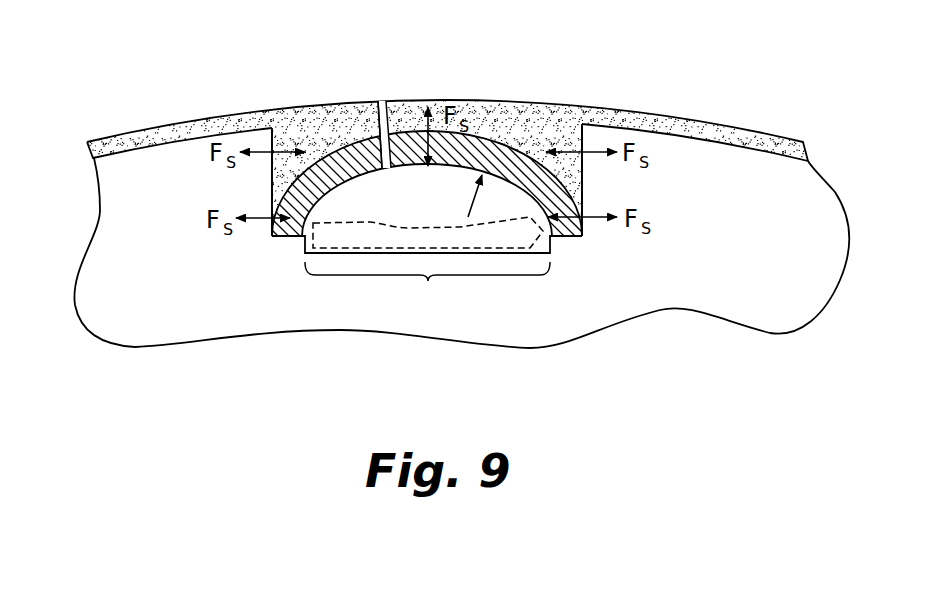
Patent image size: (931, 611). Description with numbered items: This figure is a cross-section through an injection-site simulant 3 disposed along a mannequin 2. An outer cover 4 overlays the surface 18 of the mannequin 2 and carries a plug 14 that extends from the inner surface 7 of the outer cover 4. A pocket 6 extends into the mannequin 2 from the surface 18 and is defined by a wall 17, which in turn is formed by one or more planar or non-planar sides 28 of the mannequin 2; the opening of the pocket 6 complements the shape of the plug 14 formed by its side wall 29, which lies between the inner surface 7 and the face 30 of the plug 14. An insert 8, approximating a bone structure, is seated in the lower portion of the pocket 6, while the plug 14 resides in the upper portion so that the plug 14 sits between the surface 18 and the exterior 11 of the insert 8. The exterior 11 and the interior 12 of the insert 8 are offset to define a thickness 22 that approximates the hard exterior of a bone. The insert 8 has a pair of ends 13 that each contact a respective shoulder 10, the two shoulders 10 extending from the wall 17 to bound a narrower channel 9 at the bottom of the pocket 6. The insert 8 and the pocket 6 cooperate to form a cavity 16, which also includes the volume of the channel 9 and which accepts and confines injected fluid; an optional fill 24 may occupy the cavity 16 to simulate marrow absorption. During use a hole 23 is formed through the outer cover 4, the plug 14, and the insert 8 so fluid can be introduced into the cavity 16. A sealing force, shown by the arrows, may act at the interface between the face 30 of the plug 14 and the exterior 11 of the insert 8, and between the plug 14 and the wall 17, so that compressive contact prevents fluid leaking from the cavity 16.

The mannequin 2 is at (146, 296).
The injection-site simulant 3 is at (213, 88).
The outer cover 4 is at (762, 150).
The pocket 6 is at (550, 243).
The inner surface 7 is at (740, 150).
The insert 8 is at (410, 147).
The channel 9 is at (427, 288).
The shoulder 10 is at (284, 237).
The exterior 11 is at (450, 150).
The interior 12 is at (350, 183).
The end 13 is at (273, 229).
The plug 14 is at (305, 110).
The cavity 16 is at (441, 211).
The wall 17 is at (590, 124).
The surface 18 is at (120, 158).
The thickness 22 is at (497, 133).
The hole 23 is at (378, 101).
The fill 24 is at (527, 246).
The side 28 is at (273, 157).
The side wall 29 is at (573, 130).
The face 30 is at (463, 147).